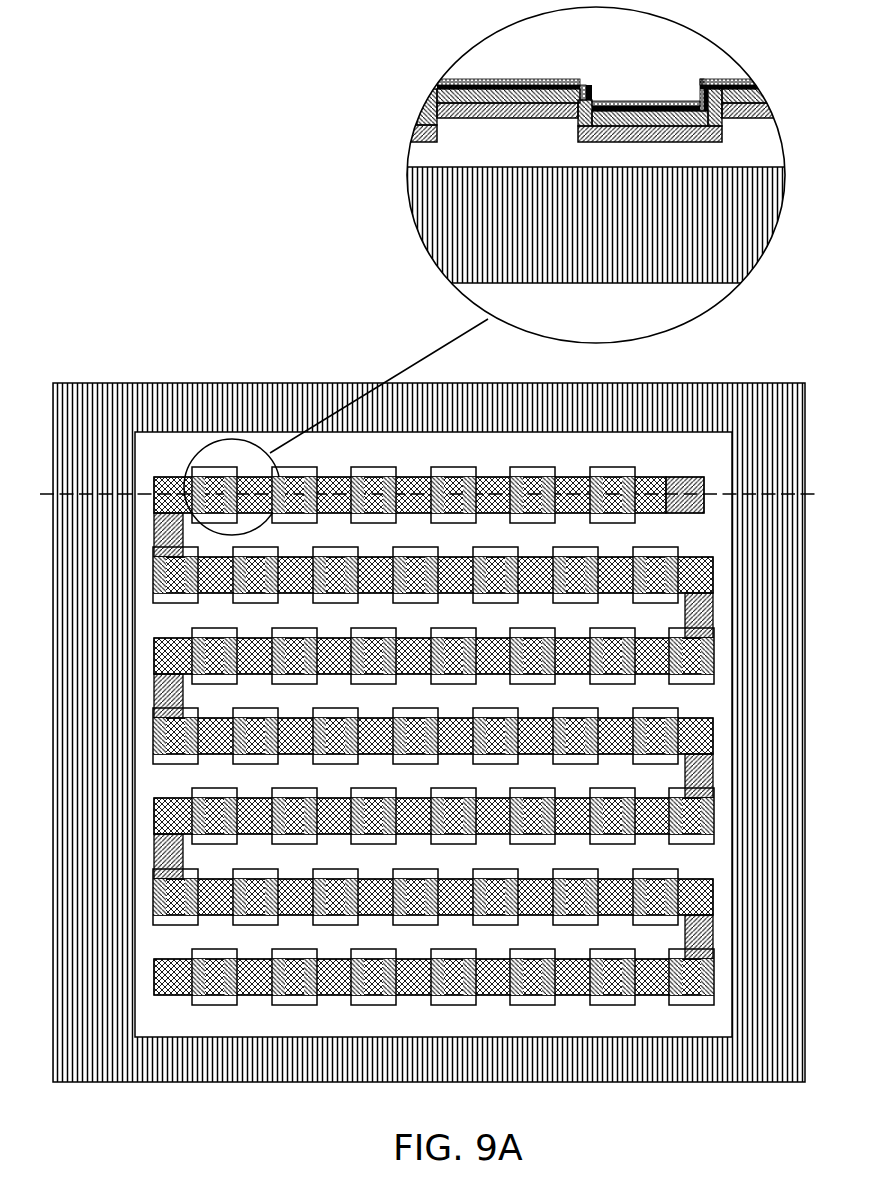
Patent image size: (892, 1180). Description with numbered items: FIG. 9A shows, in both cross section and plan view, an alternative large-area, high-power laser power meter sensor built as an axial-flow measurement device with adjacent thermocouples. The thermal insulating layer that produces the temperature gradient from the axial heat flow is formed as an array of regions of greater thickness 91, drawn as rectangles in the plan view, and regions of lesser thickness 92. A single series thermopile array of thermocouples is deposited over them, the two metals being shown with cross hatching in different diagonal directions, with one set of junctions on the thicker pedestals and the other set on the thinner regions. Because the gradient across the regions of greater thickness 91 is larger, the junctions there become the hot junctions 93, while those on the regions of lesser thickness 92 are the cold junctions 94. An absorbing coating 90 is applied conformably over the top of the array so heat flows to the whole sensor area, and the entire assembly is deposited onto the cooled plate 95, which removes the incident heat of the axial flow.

The absorbing coating 90 is at (435, 88).
The regions of greater thickness 91 is at (207, 472).
The regions of lesser thickness 92 is at (257, 473).
The hot junctions 93 is at (587, 72).
The cold junctions 94 is at (693, 82).
The cooled plate 95 is at (79, 402).